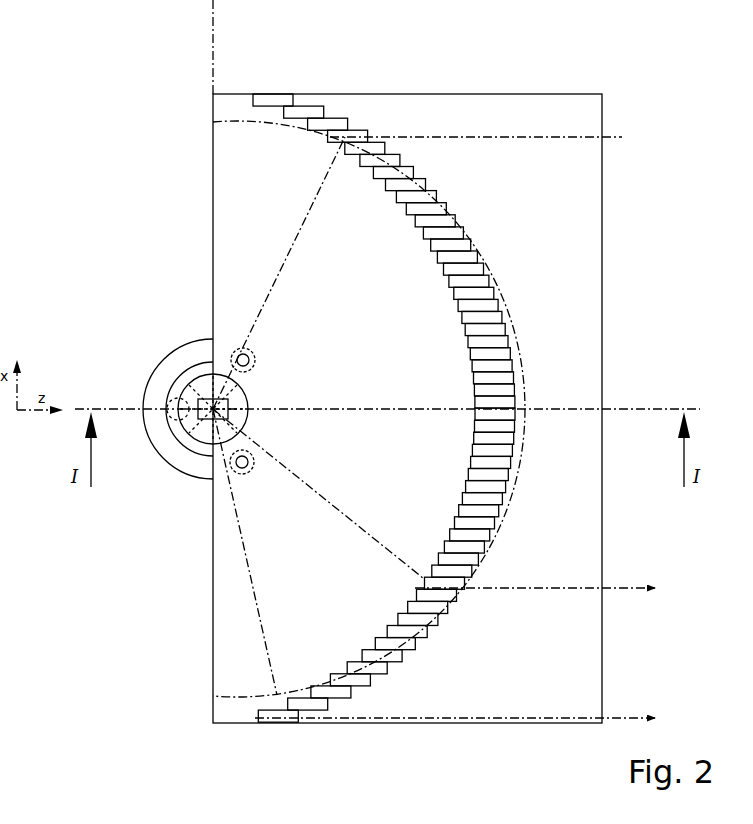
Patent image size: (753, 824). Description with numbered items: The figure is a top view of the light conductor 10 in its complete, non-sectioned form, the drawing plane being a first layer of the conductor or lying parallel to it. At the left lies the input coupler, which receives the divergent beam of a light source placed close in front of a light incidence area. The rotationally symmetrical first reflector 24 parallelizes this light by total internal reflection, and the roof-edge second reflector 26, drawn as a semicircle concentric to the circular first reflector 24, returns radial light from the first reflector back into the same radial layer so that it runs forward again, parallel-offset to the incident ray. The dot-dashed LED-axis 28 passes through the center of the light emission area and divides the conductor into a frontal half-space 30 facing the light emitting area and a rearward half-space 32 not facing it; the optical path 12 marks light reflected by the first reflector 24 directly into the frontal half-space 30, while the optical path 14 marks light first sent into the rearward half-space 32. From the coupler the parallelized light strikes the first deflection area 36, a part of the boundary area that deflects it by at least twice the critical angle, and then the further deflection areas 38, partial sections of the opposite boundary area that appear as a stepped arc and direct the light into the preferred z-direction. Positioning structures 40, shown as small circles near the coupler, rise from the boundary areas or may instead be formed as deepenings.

The light conductor 10 is at (156, 604).
The optical path 12 is at (631, 137).
The optical path 14 is at (541, 724).
The first reflector 24 is at (242, 391).
The second reflector (roof-edge reflector) 26 is at (140, 468).
The LED-axis 28 is at (200, 1).
The frontal half-space 30 is at (354, 56).
The rearward half-space 32 is at (156, 271).
The first deflection area 36 is at (236, 97).
The further deflection areas 38 is at (268, 97).
The positioning structures 40 is at (248, 474).